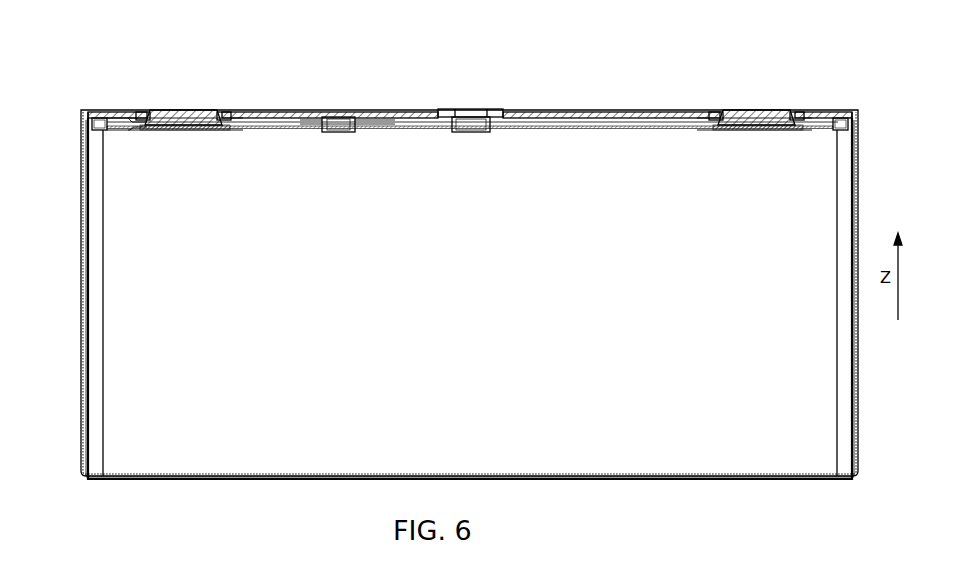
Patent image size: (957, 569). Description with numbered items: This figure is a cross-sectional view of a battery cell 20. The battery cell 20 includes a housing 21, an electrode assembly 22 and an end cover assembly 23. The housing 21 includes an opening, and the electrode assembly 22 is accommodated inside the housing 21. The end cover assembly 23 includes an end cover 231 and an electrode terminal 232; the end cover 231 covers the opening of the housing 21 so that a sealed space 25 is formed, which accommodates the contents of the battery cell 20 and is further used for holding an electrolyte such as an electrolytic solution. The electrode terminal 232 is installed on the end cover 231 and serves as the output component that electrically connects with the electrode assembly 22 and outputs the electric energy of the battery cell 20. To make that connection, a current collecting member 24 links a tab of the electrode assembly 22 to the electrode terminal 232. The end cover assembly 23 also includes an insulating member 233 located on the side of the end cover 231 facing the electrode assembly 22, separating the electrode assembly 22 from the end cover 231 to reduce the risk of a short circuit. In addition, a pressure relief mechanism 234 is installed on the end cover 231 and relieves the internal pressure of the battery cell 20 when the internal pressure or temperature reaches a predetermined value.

The battery cell 20 is at (470, 61).
The housing 21 is at (81, 184).
The electrode assembly 22 is at (122, 343).
The end cover assembly 23 is at (712, 101).
The current collecting member 24 is at (277, 122).
The sealed space 25 is at (97, 252).
The end cover 231 is at (106, 112).
The electrode terminal 232 is at (197, 110).
The insulating member 233 is at (413, 122).
The pressure relief mechanism 234 is at (477, 132).